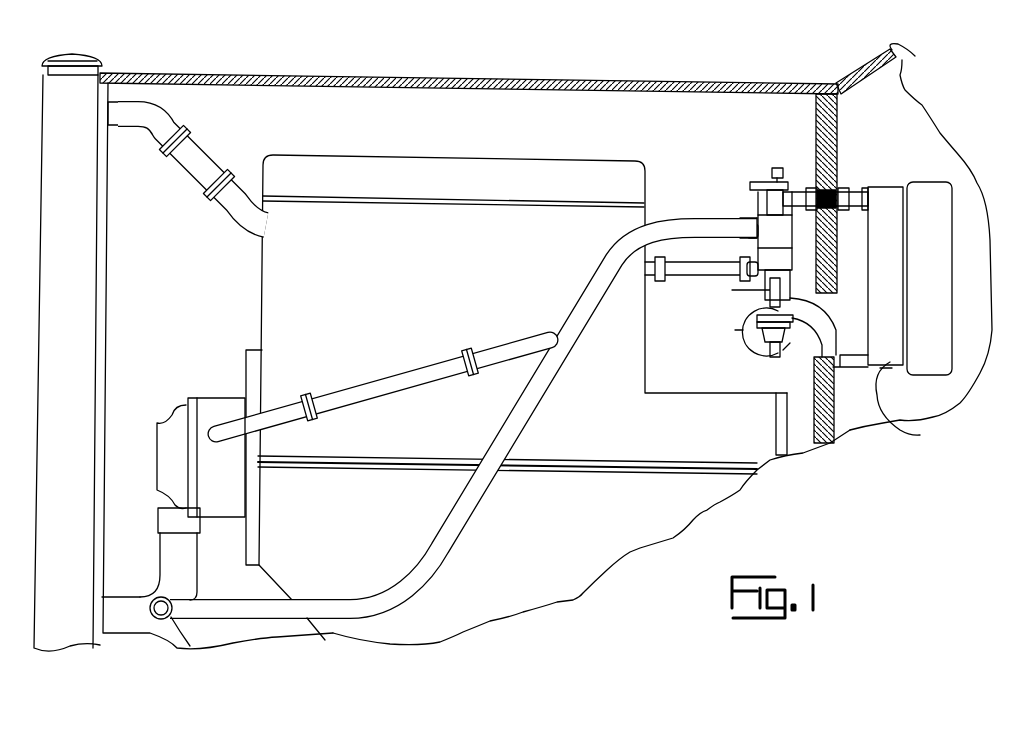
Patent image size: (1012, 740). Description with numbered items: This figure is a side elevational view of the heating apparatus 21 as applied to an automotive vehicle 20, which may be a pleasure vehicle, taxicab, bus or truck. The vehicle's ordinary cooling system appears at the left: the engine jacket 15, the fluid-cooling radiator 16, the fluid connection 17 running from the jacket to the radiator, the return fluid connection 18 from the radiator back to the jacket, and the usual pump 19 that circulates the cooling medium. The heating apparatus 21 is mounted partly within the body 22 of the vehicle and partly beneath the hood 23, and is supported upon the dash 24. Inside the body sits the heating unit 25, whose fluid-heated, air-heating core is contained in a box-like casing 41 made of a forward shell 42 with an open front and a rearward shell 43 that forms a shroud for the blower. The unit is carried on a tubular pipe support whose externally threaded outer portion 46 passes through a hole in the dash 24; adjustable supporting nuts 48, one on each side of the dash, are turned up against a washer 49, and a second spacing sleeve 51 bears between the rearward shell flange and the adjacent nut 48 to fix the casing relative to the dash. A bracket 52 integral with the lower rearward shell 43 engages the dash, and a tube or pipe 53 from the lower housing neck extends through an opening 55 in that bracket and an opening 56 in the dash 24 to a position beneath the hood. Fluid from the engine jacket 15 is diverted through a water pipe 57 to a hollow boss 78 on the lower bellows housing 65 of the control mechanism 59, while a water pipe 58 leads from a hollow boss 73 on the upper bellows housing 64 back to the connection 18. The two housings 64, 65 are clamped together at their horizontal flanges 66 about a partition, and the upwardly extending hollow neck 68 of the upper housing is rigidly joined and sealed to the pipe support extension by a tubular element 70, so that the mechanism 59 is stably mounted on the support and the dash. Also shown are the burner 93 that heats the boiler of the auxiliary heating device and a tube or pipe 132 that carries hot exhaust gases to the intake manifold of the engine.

The engine jacket 15 is at (512, 180).
The fluid-cooling radiator 16 is at (44, 237).
The fluid connection 17 is at (197, 158).
The fluid connection 18 is at (380, 383).
The pump 19 is at (165, 420).
The automotive vehicle 20 is at (702, 508).
The heating apparatus 21 is at (848, 176).
The body 22 is at (890, 69).
The hood 23 is at (669, 66).
The dash 24 is at (816, 122).
The heating unit 25 is at (927, 198).
The casing 41 is at (912, 407).
The forward shell 42 is at (943, 333).
The rearward shell 43 is at (892, 368).
The outer portion of tubular or pipe support 46 is at (790, 160).
The supporting nuts 48 is at (852, 207).
The washer 49 is at (843, 185).
The second spacing sleeve 51 is at (866, 207).
The bracket 52 is at (840, 368).
The tube or pipe 53 is at (792, 357).
The opening 55 is at (843, 325).
The opening 56 is at (790, 363).
The fluid or water pipe 57 is at (702, 275).
The fluid or water pipe 58 is at (597, 287).
The mechanism 59 is at (730, 206).
The upper bellows housing 64 is at (787, 231).
The lower bellows housing 65 is at (784, 263).
The horizontal flange 66 is at (757, 247).
The hollow neck 68 is at (765, 193).
The tubular element 70 is at (777, 175).
The hollow boss or protuberance 73 is at (753, 220).
The hollow boss or protuberance 78 is at (733, 290).
The burner 93 is at (745, 347).
The tube or pipe 132 is at (748, 210).